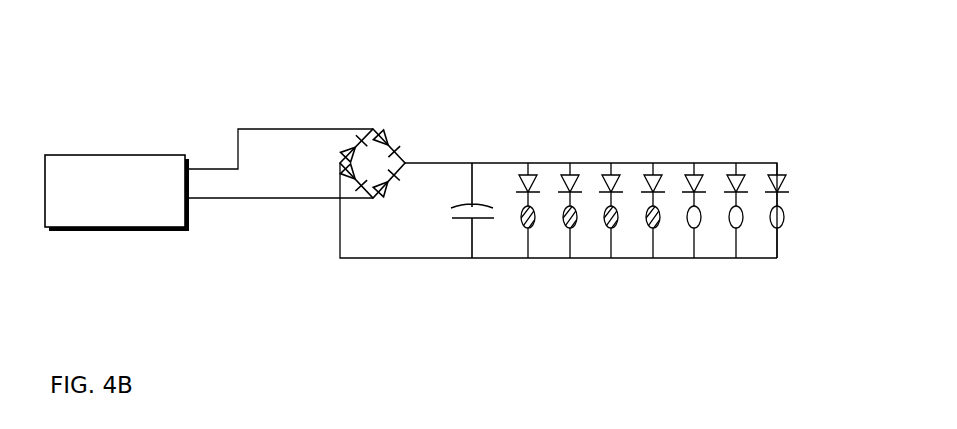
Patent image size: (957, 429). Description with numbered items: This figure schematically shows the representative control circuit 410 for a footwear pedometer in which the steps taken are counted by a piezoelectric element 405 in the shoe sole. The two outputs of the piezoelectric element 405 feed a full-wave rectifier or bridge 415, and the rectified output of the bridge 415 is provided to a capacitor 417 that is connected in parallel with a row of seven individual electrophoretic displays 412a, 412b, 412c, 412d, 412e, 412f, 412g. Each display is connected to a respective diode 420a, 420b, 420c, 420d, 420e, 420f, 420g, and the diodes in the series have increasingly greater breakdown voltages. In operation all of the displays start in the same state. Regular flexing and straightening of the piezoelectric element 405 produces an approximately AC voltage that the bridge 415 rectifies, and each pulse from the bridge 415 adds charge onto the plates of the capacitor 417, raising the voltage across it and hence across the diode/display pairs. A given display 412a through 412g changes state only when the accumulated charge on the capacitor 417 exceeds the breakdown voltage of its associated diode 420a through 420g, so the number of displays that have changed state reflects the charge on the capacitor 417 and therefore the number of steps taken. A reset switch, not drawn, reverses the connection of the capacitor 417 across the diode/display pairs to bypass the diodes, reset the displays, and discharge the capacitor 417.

The piezoelectric element 405 is at (142, 155).
The circuit 410 is at (258, 68).
The full-wave rectifier or bridge 415 is at (402, 132).
The capacitor 417 is at (454, 218).
The diode 420a is at (526, 174).
The diode 420b is at (568, 174).
The diode 420c is at (609, 174).
The diode 420d is at (652, 174).
The diode 420e is at (697, 172).
The diode 420f is at (740, 172).
The diode 420g is at (782, 163).
The electrophoretic display 412a is at (524, 229).
The electrophoretic display 412b is at (566, 229).
The electrophoretic display 412c is at (607, 229).
The electrophoretic display 412d is at (648, 229).
The electrophoretic display 412e is at (696, 229).
The electrophoretic display 412f is at (738, 229).
The electrophoretic display 412g is at (781, 225).